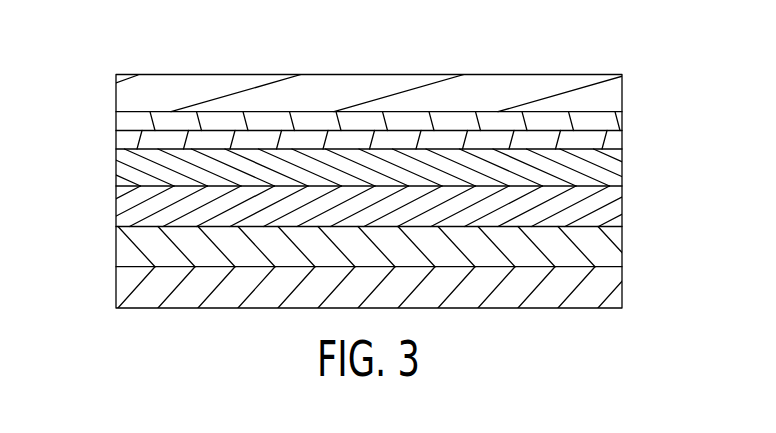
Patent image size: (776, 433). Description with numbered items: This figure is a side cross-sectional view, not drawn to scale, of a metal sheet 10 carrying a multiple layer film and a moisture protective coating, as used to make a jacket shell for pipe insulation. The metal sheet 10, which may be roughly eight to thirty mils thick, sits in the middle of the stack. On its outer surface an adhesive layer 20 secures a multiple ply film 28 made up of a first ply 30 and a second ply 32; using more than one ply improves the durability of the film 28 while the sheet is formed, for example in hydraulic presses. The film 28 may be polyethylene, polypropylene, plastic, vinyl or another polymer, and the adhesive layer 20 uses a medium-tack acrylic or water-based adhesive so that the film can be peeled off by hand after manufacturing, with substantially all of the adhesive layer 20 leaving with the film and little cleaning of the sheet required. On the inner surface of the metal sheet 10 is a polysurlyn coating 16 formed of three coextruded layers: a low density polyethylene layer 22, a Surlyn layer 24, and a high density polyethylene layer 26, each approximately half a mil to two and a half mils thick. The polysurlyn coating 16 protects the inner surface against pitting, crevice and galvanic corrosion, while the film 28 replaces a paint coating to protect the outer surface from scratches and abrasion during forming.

The metal sheet 10 is at (622, 170).
The polysurlyn coating 16 is at (622, 186).
The adhesive layer 20 is at (622, 141).
The low density polyethylene layer 22 is at (622, 207).
The Surlyn layer 24 is at (622, 240).
The high density polyethylene layer 26 is at (622, 290).
The multiple ply film 28 is at (107, 72).
The first ply 30 is at (622, 117).
The second ply 32 is at (622, 91).